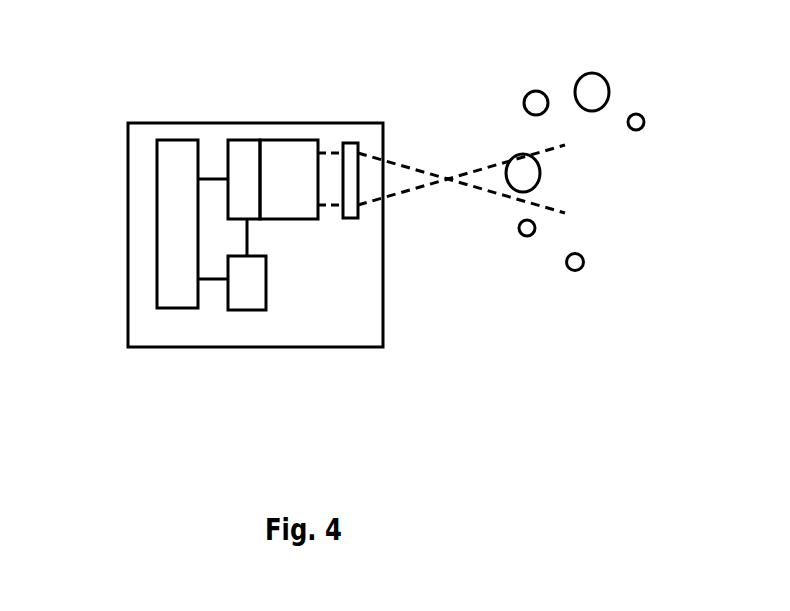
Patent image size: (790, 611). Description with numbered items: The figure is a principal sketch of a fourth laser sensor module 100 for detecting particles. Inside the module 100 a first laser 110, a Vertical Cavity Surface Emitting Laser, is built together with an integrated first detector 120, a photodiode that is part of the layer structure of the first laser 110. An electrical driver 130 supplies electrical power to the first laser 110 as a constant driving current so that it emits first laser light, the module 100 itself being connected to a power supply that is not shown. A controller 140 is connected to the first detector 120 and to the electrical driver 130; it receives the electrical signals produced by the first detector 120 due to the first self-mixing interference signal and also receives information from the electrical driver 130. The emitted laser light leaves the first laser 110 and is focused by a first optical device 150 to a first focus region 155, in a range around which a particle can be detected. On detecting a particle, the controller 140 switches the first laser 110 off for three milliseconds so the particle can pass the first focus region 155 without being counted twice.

The fourth laser sensor module 100 is at (158, 123).
The first laser 110 is at (282, 140).
The first detector 120 is at (245, 140).
The electrical driver 130 is at (157, 232).
The controller 140 is at (247, 310).
The first optical device 150 is at (353, 143).
The first focus region 155 is at (443, 177).